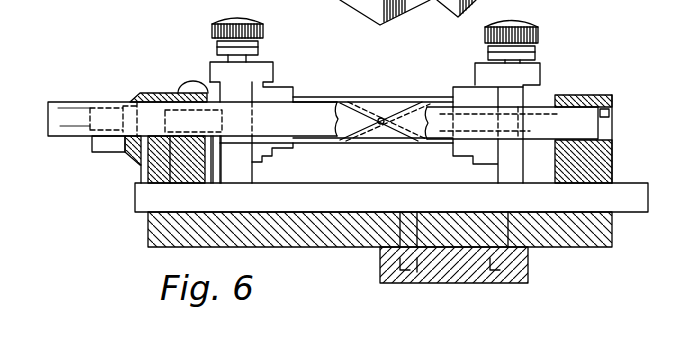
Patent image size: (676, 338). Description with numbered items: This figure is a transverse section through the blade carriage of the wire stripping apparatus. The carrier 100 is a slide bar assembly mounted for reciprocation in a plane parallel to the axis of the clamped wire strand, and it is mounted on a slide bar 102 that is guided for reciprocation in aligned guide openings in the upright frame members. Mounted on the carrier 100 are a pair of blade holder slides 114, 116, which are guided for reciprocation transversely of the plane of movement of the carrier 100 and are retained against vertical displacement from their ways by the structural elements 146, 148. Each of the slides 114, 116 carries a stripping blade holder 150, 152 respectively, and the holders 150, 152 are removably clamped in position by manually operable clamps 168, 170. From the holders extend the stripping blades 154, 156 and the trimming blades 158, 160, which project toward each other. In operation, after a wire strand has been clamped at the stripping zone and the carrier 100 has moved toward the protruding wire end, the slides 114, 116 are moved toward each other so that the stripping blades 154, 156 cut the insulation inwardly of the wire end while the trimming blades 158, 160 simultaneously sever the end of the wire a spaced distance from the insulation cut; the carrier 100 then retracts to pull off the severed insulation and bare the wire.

The carrier 100 is at (163, 248).
The slide bar 102 is at (380, 270).
The blade holder slide 114 is at (543, 107).
The blade holder slide 116 is at (155, 192).
The structural element 146 is at (163, 92).
The structural element 148 is at (150, 169).
The stripping blade holder 150 is at (463, 86).
The stripping blade holder 152 is at (282, 77).
The stripping blade 154 is at (410, 100).
The stripping blade 156 is at (325, 96).
The trimming blade 158 is at (414, 128).
The trimming blade 160 is at (348, 132).
The manually operable clamp 168 is at (533, 72).
The manually operable clamp 170 is at (208, 68).